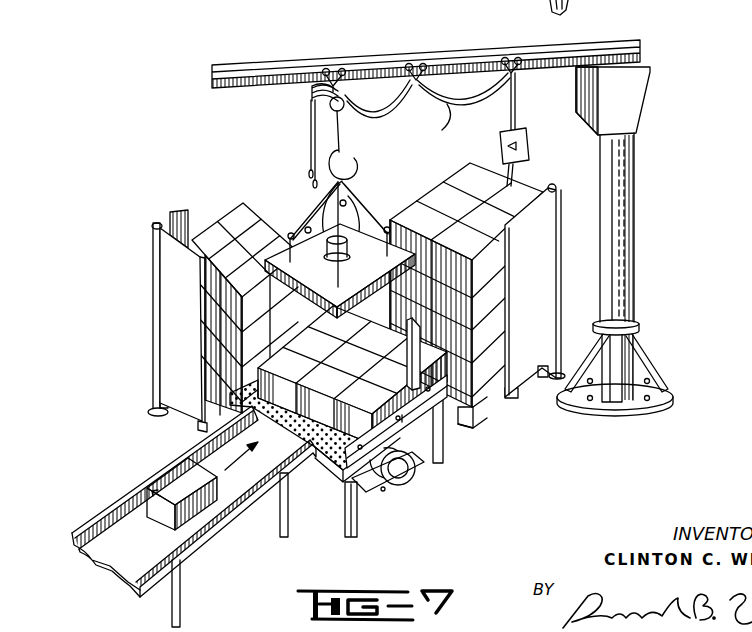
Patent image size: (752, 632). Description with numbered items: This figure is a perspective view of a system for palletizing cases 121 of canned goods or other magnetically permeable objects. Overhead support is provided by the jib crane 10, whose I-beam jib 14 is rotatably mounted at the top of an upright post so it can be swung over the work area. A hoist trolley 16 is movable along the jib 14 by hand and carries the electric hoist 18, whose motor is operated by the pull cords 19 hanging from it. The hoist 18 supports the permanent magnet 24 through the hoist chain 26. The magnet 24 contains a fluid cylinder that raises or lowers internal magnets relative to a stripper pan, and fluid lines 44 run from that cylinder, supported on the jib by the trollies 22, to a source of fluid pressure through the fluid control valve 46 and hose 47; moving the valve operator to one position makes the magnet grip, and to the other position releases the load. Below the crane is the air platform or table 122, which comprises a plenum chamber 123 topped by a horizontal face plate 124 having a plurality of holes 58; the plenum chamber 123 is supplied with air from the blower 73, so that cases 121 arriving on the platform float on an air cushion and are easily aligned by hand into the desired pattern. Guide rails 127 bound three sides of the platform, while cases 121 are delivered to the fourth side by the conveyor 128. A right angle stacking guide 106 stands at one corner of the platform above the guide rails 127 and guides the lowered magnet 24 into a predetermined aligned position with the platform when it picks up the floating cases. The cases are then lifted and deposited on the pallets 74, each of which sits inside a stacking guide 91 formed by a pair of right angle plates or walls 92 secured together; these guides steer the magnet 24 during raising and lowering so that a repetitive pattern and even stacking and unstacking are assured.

The jib crane 10 is at (641, 184).
The jib 14 is at (242, 65).
The hoist trolley 16 is at (335, 68).
The electric hoist 18 is at (328, 112).
The pull cords 19 is at (312, 142).
The trollies 22 is at (419, 70).
The permanent magnet 24 is at (311, 228).
The hoist chain 26 is at (350, 124).
The fluid lines 44 is at (448, 106).
The fluid control valve 46 is at (530, 148).
The hose 47 is at (504, 178).
The holes 58 is at (323, 455).
The blower 73 is at (410, 476).
The pallets 74 is at (487, 413).
The stacking guide 91 is at (566, 255).
The right angle plates or walls 92 is at (173, 340).
The stacking guide 106 is at (425, 357).
The cases 121 is at (228, 216).
The air platform or table 122 is at (361, 490).
The plenum chamber 123 is at (413, 420).
The face plate 124 is at (292, 438).
The guide rails 127 is at (420, 432).
The conveyor 128 is at (120, 533).